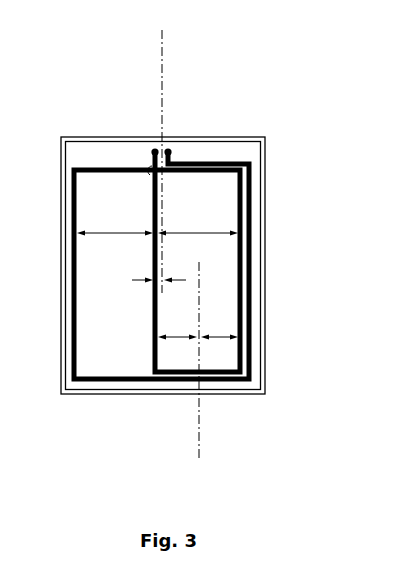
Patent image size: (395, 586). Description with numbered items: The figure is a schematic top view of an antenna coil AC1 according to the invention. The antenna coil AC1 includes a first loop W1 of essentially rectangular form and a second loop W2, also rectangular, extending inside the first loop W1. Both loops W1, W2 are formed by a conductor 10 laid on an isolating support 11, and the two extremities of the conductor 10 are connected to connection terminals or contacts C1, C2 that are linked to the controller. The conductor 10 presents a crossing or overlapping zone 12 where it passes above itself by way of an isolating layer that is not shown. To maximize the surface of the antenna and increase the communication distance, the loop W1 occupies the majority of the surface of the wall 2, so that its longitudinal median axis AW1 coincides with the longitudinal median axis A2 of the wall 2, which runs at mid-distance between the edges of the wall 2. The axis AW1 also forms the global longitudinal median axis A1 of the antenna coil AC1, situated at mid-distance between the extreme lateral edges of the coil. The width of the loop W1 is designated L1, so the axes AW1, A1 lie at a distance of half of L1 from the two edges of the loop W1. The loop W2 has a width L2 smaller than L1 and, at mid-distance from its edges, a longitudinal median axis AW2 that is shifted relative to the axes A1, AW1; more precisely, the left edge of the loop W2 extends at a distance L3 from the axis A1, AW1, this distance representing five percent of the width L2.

The wall 2 is at (61, 357).
The conductor 10 is at (139, 240).
The isolating support 11 is at (66, 260).
The crossing or overlapping zone 12 is at (150, 166).
The connection terminal C1 is at (153, 148).
The connection terminal C2 is at (170, 148).
The antenna coil AC1 is at (229, 158).
The longitudinal median axis of the first loop AW1 is at (162, 86).
The longitudinal median axis of the second loop AW2 is at (199, 437).
The global longitudinal median axis of the antenna coil A1 is at (172, 161).
The longitudinal median axis of the wall A2 is at (172, 161).
The width of the first loop L1 is at (157, 226).
The width of the second loop L2 is at (198, 329).
The distance between the left edge of the second loop and the median axis L3 is at (150, 280).
The first loop W1 is at (252, 233).
The second loop W2 is at (240, 213).